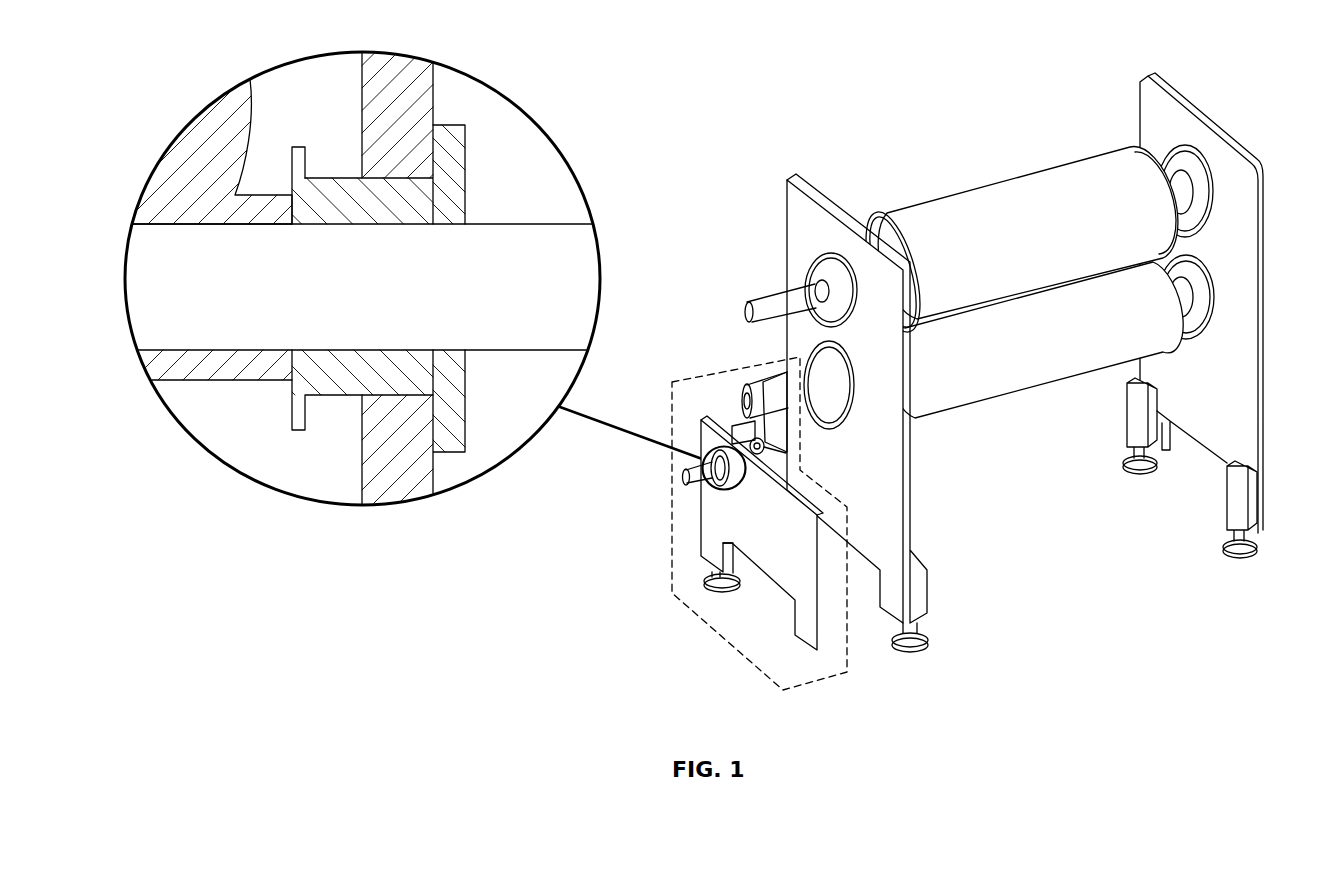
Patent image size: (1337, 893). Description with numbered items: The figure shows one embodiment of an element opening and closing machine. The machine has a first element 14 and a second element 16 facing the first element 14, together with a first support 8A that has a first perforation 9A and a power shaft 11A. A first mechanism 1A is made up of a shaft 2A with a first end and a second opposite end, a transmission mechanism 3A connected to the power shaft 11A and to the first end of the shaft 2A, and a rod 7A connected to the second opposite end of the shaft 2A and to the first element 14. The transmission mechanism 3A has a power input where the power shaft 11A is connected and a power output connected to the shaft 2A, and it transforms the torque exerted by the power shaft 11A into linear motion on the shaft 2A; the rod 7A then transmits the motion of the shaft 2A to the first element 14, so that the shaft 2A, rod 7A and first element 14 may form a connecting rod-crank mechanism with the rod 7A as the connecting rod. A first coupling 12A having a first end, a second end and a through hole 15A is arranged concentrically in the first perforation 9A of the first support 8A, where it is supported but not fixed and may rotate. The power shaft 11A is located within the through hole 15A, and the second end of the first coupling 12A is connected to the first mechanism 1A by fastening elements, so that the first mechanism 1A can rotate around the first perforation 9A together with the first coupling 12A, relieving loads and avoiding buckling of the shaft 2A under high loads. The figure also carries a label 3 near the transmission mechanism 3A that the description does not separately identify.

The first mechanism 1A is at (695, 380).
The shaft 2A is at (790, 492).
The sensor 3 is at (731, 428).
The transmission mechanism 3A is at (200, 152).
The rod 7A is at (785, 430).
The first support 8A is at (362, 480).
The first perforation 9A is at (432, 385).
The power shaft 11A is at (690, 483).
The first coupling 12A is at (347, 200).
The first element 14 is at (1027, 368).
The through hole 15A is at (413, 223).
The second element 16 is at (982, 205).